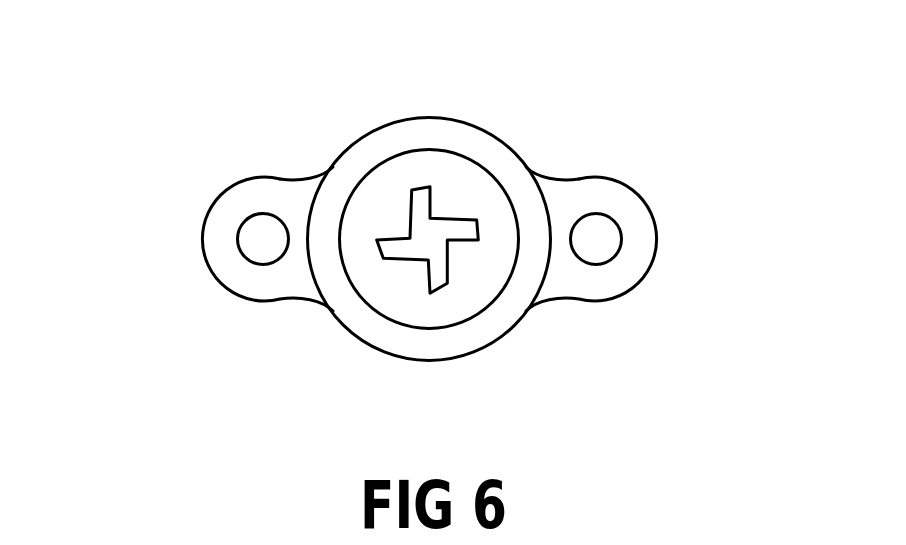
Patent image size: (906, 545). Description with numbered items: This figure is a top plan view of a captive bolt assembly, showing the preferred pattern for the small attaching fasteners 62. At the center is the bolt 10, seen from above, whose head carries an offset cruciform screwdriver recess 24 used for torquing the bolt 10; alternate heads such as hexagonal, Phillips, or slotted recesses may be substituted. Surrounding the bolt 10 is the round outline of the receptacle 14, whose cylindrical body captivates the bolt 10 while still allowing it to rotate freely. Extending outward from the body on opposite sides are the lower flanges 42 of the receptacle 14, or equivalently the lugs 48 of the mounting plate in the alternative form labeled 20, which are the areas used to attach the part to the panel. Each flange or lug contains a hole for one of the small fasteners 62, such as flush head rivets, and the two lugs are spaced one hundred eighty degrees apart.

The bolt 10 is at (405, 152).
The receptacle 14 is at (523, 199).
The outer ring (alternate embodiment) 20 is at (486, 132).
The offset cruciform screwdriver recess 24 is at (463, 243).
The lower flanges 42 is at (360, 287).
The lugs 48 is at (201, 245).
The small fasteners 62 is at (257, 215).